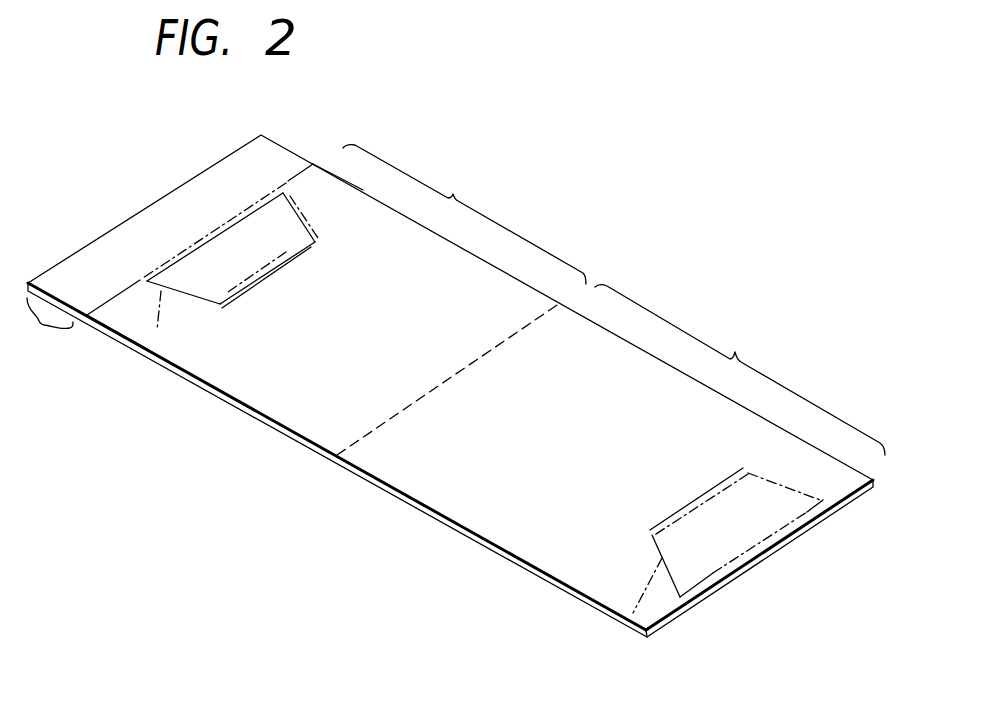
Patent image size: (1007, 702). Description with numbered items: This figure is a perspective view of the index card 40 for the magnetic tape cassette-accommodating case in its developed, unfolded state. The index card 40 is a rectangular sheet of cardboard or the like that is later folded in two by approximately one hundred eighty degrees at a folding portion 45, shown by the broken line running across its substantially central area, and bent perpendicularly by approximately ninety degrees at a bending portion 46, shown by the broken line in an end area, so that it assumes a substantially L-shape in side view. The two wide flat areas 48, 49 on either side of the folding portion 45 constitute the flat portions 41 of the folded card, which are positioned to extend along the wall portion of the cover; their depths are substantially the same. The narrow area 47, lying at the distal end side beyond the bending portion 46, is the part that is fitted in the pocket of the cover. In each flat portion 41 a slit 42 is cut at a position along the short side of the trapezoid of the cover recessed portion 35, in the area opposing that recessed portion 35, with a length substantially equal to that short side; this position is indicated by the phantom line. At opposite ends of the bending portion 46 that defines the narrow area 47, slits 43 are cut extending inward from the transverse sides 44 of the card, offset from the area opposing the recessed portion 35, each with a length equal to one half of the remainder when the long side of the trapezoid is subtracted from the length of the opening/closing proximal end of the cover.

The index card 40 is at (512, 113).
The flat portion 41 is at (263, 410).
The slit 42 is at (305, 245).
The slit 43 is at (300, 173).
The transverse side 44 is at (363, 190).
The folding portion 45 is at (517, 337).
The bending portion 46 is at (199, 241).
The narrow area 47 is at (49, 331).
The wide flat area 48 is at (464, 214).
The wide flat area 49 is at (740, 370).
The cover recessed portion 35 is at (157, 330).